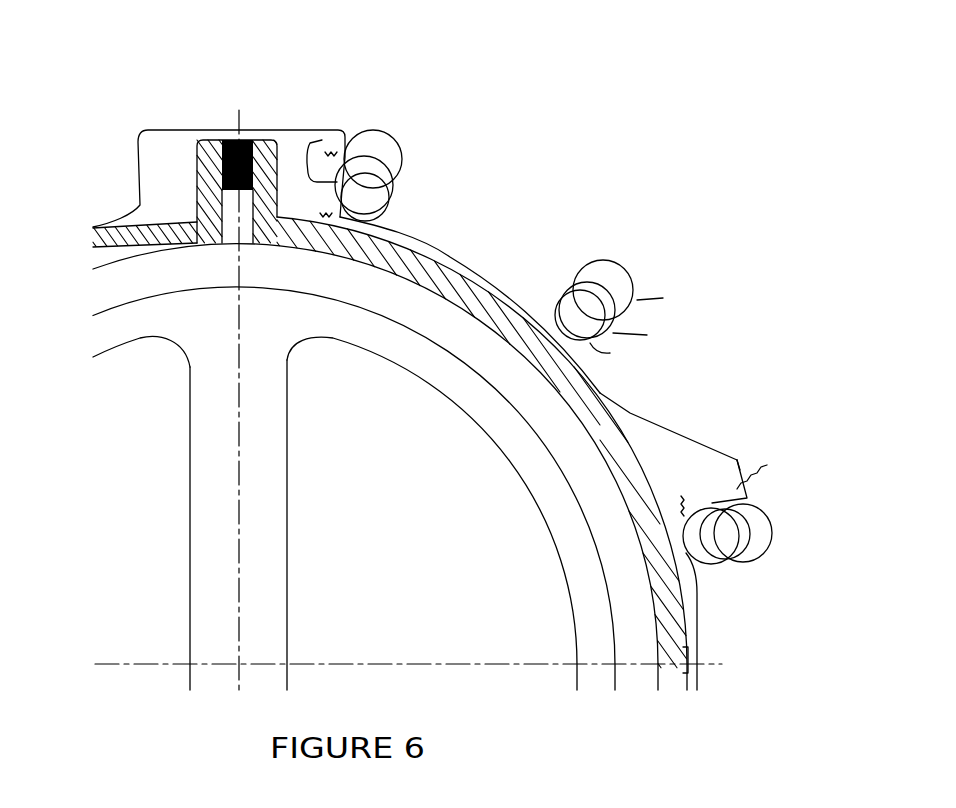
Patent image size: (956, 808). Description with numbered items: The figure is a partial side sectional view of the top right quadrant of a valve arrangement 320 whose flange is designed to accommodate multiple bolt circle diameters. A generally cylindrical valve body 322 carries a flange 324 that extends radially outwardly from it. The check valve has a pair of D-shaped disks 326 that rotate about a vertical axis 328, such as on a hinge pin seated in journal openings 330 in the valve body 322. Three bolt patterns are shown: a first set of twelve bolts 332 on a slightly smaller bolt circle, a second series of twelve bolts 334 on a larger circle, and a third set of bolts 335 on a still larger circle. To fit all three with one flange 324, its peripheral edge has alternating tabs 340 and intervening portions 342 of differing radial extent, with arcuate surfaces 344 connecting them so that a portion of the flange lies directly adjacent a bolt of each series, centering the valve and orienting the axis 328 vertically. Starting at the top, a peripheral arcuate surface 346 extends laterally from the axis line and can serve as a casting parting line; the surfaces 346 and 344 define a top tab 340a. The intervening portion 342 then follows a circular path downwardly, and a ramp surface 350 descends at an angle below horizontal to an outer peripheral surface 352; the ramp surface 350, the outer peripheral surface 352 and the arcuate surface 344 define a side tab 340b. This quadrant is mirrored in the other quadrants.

The valve arrangement 320 is at (778, 324).
The valve body 322 is at (683, 633).
The flange 324 is at (600, 393).
The D-shaped disks 326 is at (143, 357).
The vertical axis 328 is at (240, 508).
The journal openings 330 is at (230, 233).
The first set of bolts 332 is at (390, 218).
The second series of bolts 334 is at (397, 190).
The third set of bolts 335 is at (403, 153).
The tabs 340 is at (148, 157).
The top tab 340a is at (290, 157).
The side tab 340b is at (683, 460).
The intervening portion 342 is at (450, 257).
The arcuate surface 344 is at (322, 140).
The peripheral arcuate surface 346 is at (300, 130).
The ramp surface 350 is at (670, 427).
The outer peripheral surface 352 is at (737, 463).